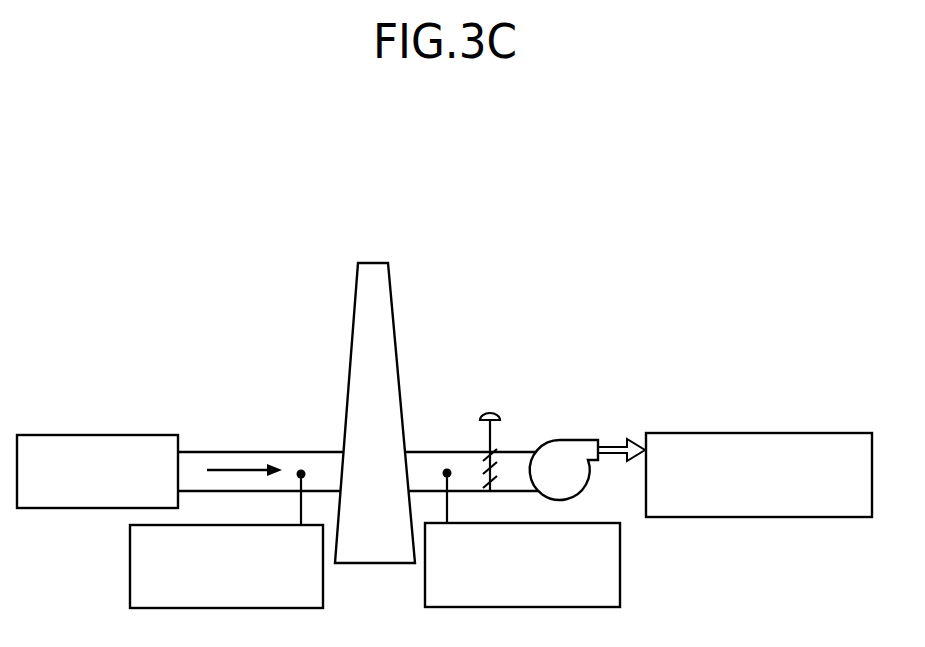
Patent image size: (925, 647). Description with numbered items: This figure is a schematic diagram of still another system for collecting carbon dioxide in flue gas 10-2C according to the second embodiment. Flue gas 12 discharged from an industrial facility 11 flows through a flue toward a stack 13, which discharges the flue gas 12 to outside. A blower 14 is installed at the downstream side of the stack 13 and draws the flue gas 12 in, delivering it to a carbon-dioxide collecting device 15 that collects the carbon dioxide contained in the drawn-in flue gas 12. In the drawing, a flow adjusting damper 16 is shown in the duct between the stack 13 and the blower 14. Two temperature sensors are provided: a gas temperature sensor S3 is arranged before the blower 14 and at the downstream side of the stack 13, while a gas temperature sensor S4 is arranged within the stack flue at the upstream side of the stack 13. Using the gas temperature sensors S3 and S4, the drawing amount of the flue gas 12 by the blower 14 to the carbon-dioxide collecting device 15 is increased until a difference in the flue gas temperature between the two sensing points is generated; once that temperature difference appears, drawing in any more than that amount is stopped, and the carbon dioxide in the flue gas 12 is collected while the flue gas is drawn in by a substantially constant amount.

The system for collecting carbon dioxide in flue gas 10-2C is at (400, 221).
The industrial facility 11 is at (140, 435).
The flue gas 12 is at (236, 468).
The stack 13 is at (356, 290).
The blower 14 is at (588, 440).
The carbon-dioxide collecting device 15 is at (800, 433).
The flow adjusting damper 16 is at (490, 451).
The gas temperature sensor S3 is at (620, 565).
The gas temperature sensor S4 is at (130, 568).